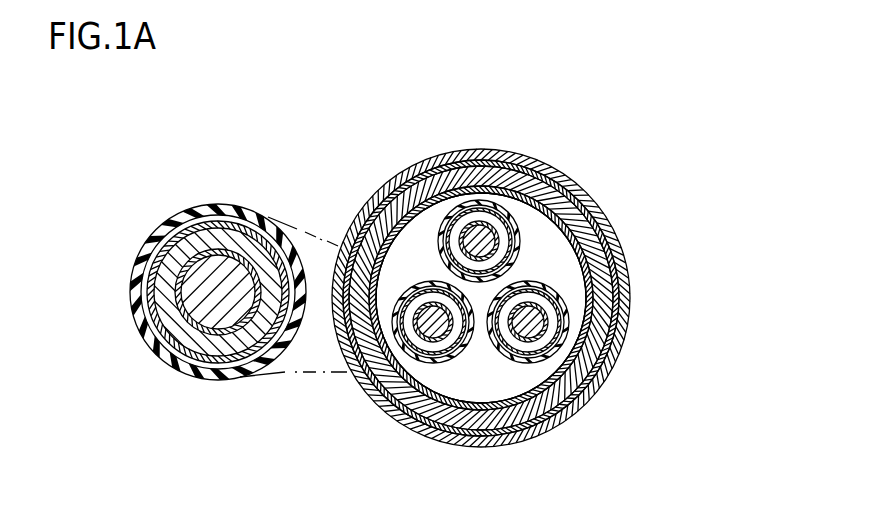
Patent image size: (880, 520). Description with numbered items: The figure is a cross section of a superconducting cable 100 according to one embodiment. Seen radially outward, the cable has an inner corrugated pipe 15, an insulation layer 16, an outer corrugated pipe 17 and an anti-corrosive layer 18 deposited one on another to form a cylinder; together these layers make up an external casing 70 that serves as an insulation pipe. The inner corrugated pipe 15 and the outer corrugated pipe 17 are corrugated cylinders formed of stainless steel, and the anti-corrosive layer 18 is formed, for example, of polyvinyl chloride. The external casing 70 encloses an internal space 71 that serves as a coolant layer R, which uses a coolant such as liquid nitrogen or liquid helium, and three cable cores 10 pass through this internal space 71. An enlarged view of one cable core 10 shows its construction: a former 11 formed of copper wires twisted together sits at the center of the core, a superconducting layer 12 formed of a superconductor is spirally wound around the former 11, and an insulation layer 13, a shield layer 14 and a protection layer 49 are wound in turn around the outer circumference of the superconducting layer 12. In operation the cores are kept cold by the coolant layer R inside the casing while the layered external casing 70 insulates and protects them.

The superconducting cable 100 is at (380, 159).
The cable core 10 is at (455, 370).
The former 11 is at (223, 307).
The superconducting layer 12 is at (176, 340).
The insulation layer 13 is at (165, 295).
The shield layer 14 is at (147, 242).
The protection layer 49 is at (225, 212).
The inner corrugated pipe 15 is at (597, 278).
The insulation layer 16 is at (596, 324).
The outer corrugated pipe 17 is at (603, 248).
The anti-corrosive layer 18 is at (590, 388).
The external casing 70 is at (718, 168).
The internal space 71 is at (529, 227).
The coolant layer R is at (540, 247).